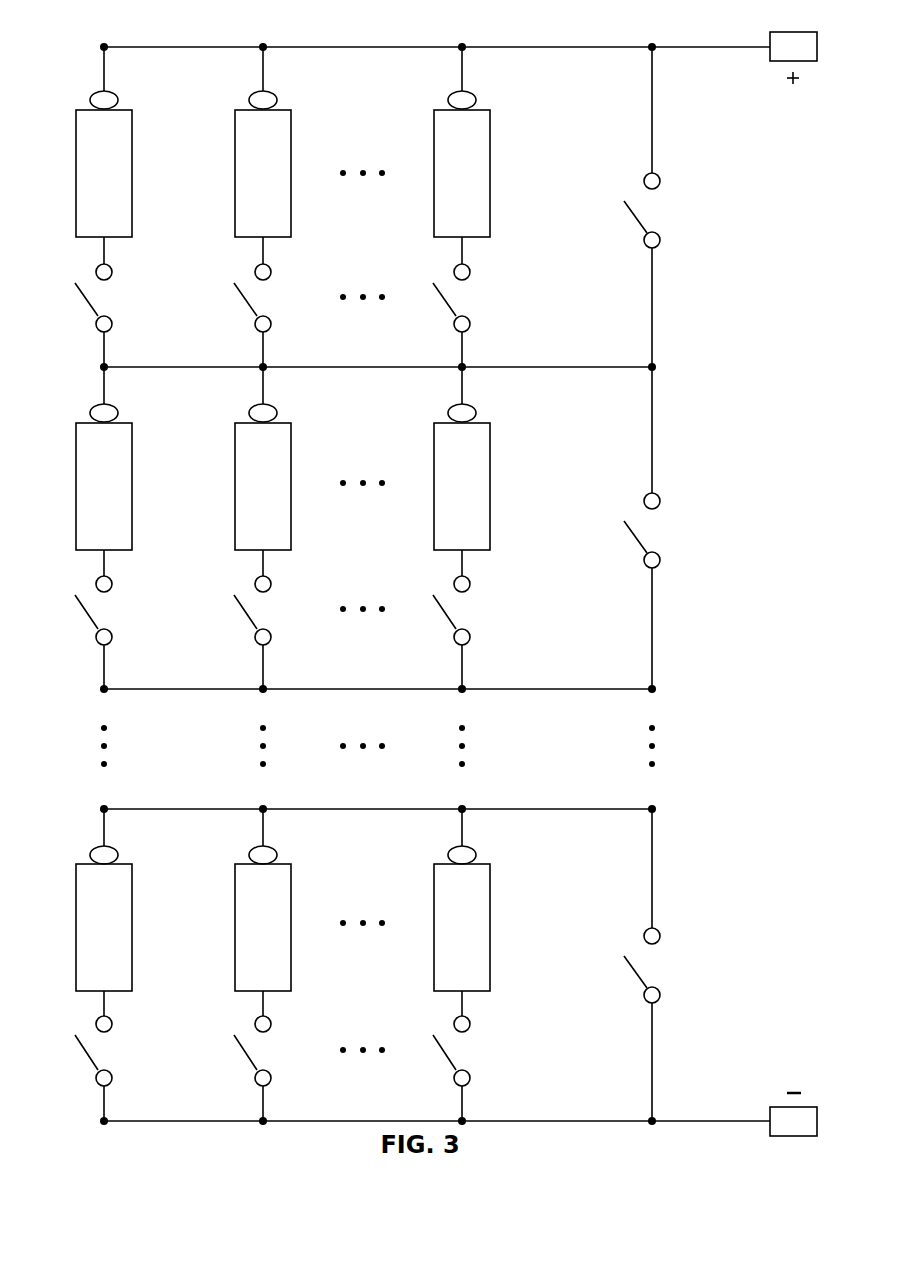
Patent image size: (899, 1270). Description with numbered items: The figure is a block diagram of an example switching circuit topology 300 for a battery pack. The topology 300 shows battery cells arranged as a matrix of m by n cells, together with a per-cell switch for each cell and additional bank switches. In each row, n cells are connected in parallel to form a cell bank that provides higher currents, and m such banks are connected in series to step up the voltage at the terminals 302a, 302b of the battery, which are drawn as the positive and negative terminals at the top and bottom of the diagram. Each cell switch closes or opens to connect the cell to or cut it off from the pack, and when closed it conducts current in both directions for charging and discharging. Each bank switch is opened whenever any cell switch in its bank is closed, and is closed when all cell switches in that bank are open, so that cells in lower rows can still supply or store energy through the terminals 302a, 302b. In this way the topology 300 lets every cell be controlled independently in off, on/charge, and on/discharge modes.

The switching circuit topology 300 is at (72, 48).
The terminal 302a is at (770, 62).
The terminal 302b is at (770, 1107).